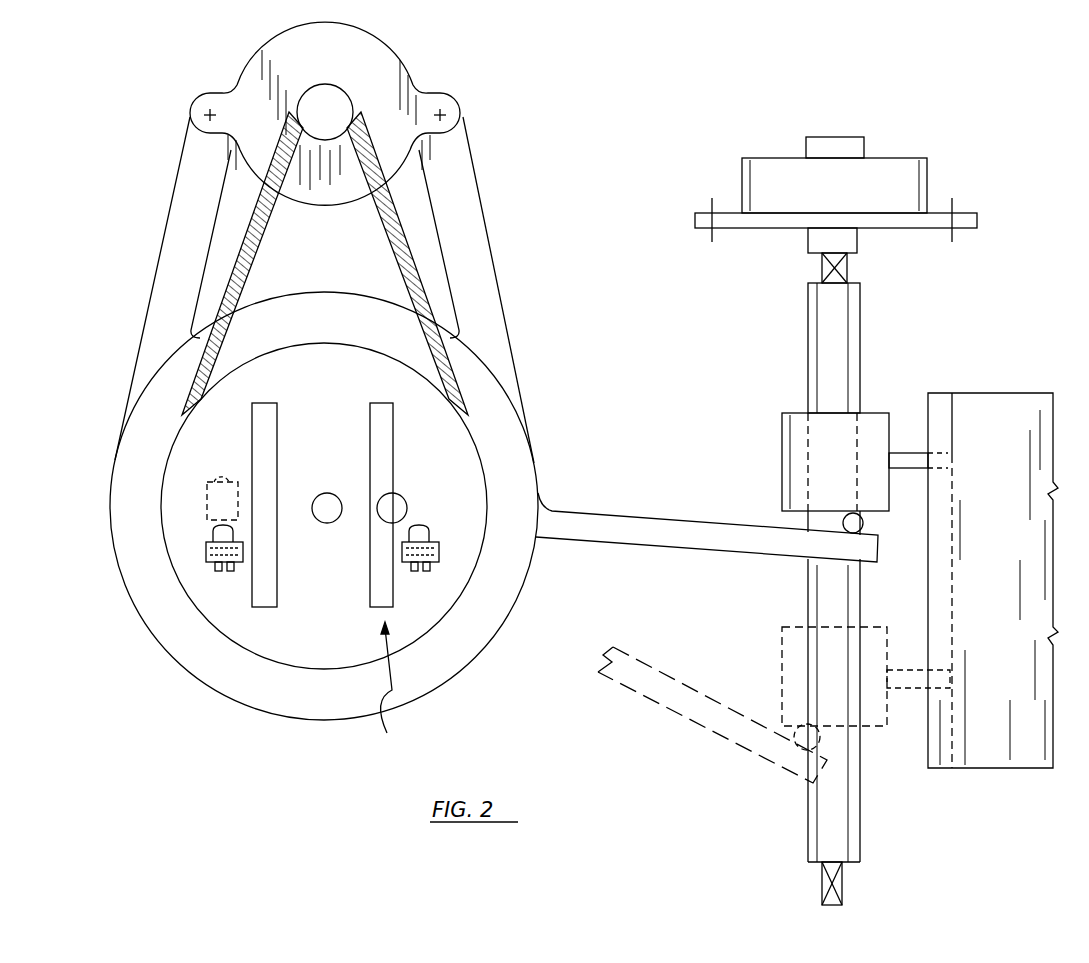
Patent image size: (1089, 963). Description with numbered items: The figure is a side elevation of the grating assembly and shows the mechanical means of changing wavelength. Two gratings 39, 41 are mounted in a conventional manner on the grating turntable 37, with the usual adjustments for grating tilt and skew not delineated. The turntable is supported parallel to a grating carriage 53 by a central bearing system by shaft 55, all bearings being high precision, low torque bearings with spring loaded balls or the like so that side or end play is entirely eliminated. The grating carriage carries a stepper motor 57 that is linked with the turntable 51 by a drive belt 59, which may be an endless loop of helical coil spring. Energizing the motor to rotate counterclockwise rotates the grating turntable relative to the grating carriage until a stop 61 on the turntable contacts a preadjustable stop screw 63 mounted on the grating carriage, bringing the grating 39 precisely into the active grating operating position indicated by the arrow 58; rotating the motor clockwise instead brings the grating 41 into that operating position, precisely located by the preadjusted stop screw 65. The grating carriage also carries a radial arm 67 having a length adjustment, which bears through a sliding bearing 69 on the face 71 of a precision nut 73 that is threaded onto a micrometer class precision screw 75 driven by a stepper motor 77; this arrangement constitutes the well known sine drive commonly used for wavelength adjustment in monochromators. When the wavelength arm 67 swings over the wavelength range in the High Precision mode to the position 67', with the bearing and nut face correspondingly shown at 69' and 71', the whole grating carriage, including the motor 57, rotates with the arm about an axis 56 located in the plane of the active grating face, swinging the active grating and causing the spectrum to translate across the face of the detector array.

The grating turntable 37 is at (320, 343).
The grating 39 is at (395, 445).
The grating 41 is at (252, 444).
The turntable 51 is at (487, 470).
The grating carriage 53 is at (500, 287).
The shaft 55 is at (331, 523).
The axis 56 is at (404, 498).
The stepper motor 57 is at (407, 73).
The arrow 58 is at (390, 692).
The drive belt 59 is at (413, 258).
The stop 61 is at (217, 508).
The stop screw 63 is at (207, 552).
The stop screw 65 is at (447, 557).
The radial arm 67 is at (707, 548).
The position of radial arm 67' is at (712, 715).
The sliding bearing 69 is at (884, 527).
The position of sliding bearing 69' is at (857, 755).
The face 71 is at (739, 472).
The position of face 71' is at (834, 676).
The precision nut 73 is at (847, 462).
The precision screw 75 is at (860, 353).
The stepper motor 77 is at (852, 199).